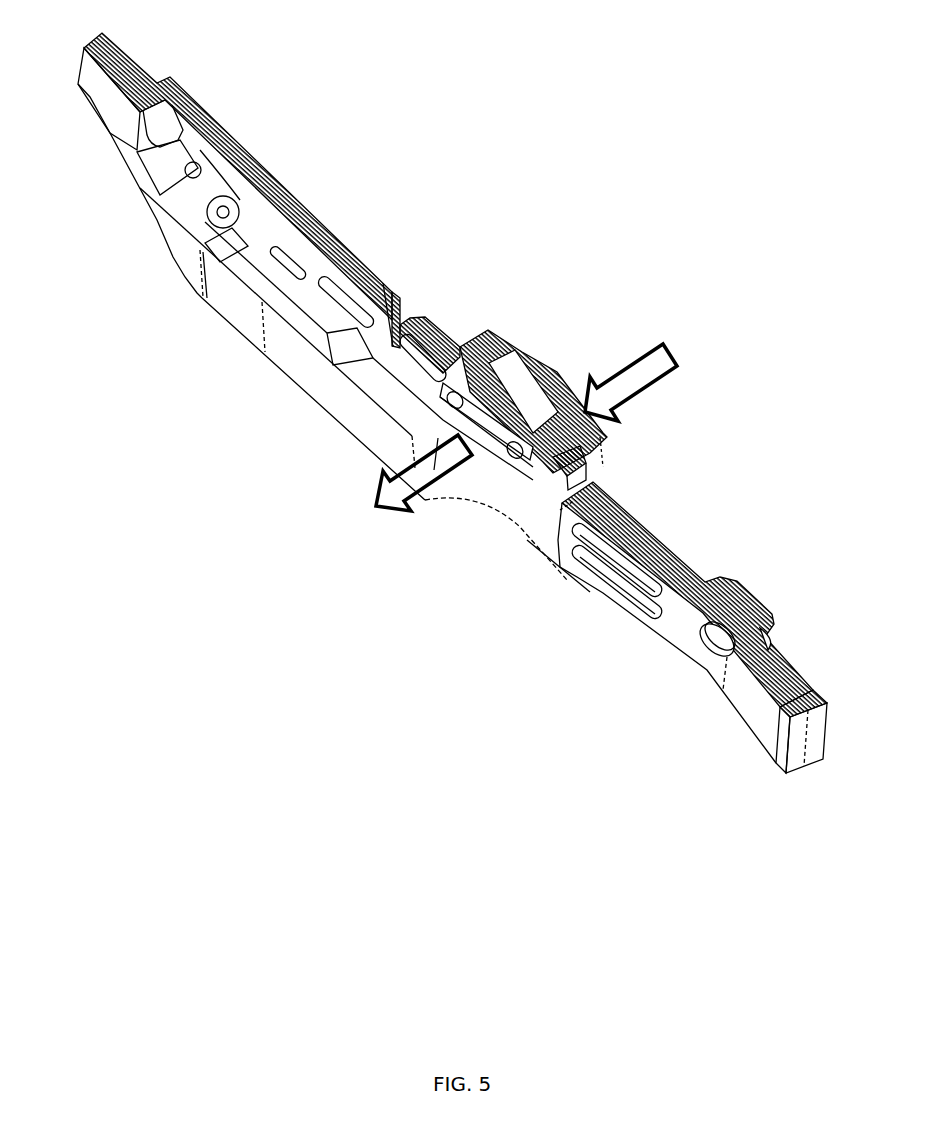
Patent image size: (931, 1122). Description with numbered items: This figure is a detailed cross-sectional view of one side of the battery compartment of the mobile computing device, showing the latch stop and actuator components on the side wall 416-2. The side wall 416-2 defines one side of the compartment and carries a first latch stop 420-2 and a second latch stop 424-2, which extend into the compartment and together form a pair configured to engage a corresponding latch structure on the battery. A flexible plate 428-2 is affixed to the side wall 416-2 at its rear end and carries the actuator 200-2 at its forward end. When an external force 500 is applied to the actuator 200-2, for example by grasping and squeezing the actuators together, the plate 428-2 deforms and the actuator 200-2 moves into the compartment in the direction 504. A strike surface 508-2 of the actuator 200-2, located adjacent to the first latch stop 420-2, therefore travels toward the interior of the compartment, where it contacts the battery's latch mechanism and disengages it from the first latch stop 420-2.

The side wall 416-2 is at (242, 312).
The flexible plate 428-2 is at (305, 290).
The actuator 200-2 is at (532, 378).
The strike surface 508-2 is at (557, 475).
The external force 500 is at (675, 342).
The direction 504 is at (377, 513).
The first latch stop 420-2 is at (575, 488).
The second latch stop 424-2 is at (788, 698).